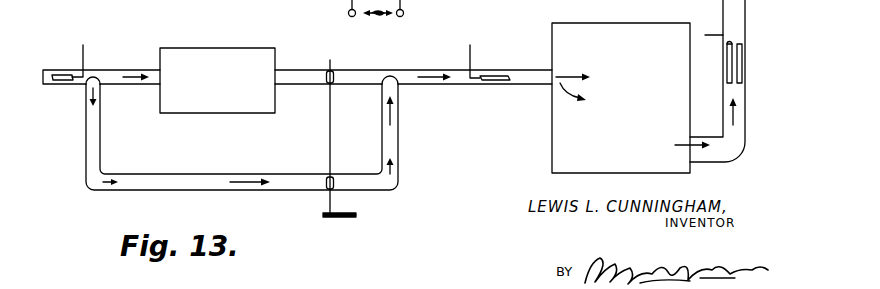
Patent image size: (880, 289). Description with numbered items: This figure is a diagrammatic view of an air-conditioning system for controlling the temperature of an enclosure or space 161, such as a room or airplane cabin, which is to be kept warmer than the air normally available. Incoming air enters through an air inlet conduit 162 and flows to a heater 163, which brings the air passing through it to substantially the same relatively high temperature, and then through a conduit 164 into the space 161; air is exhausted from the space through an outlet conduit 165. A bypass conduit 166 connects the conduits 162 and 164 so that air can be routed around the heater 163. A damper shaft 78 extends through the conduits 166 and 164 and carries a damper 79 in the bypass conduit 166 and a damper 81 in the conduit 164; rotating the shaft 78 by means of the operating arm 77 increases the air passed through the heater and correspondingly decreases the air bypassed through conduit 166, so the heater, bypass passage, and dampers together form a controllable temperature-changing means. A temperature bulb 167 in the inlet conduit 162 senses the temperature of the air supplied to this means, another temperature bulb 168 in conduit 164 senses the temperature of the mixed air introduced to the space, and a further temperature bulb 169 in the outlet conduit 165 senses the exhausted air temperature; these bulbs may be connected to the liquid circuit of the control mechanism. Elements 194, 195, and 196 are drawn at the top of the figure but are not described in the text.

The operating arm 77 is at (352, 218).
The damper shaft 78 is at (327, 118).
The damper 79 is at (334, 181).
The damper 81 is at (325, 77).
The space 161 is at (631, 98).
The air inlet conduit 162 is at (46, 68).
The heater 163 is at (213, 52).
The conduit 164 is at (367, 70).
The outlet conduit 165 is at (772, 6).
The bypass conduit 166 is at (222, 173).
The temperature bulb 167 is at (60, 82).
The temperature bulb 168 is at (500, 75).
The temperature bulb 169 is at (742, 62).
The contact 194 is at (487, 0).
The contact 195 is at (404, 15).
The contact 196 is at (348, 14).